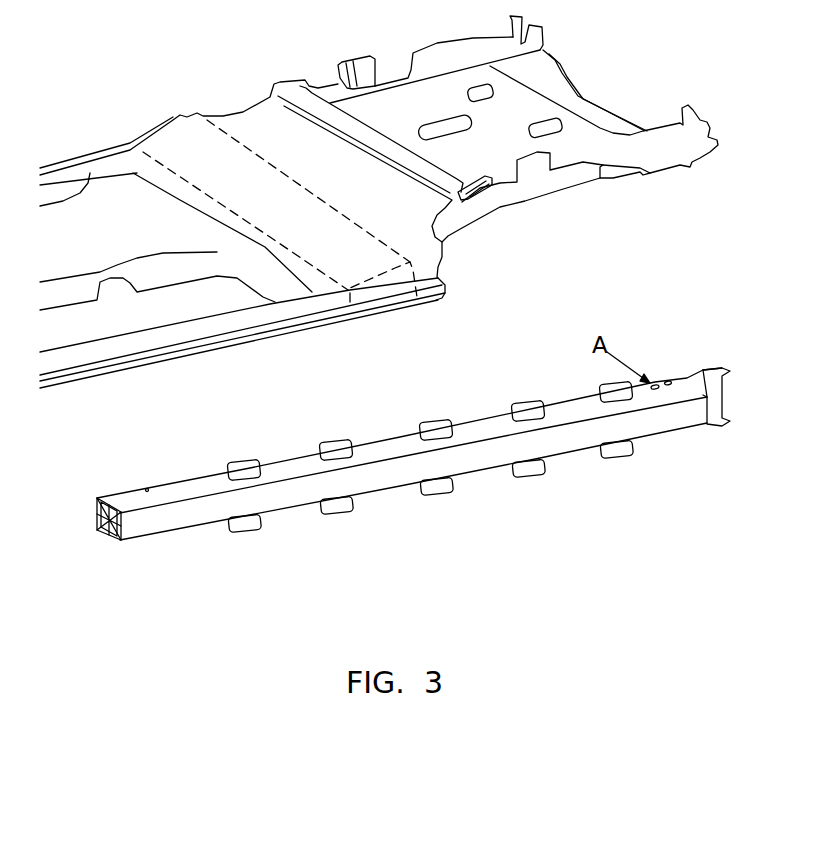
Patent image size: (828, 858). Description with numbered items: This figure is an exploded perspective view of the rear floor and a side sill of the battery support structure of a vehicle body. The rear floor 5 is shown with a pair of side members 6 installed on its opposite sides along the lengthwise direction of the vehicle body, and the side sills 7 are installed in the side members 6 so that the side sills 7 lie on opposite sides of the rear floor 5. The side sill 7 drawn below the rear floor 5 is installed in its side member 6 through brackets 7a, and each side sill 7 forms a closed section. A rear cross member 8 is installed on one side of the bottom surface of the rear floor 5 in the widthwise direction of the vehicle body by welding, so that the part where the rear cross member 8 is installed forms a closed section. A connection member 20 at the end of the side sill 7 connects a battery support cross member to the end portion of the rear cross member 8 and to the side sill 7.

The rear floor 5 is at (145, 202).
The side member 6 is at (88, 173).
The side sill 7 is at (477, 458).
The bracket 7a is at (530, 410).
The rear cross member 8 is at (255, 152).
The connection member 20 is at (712, 380).